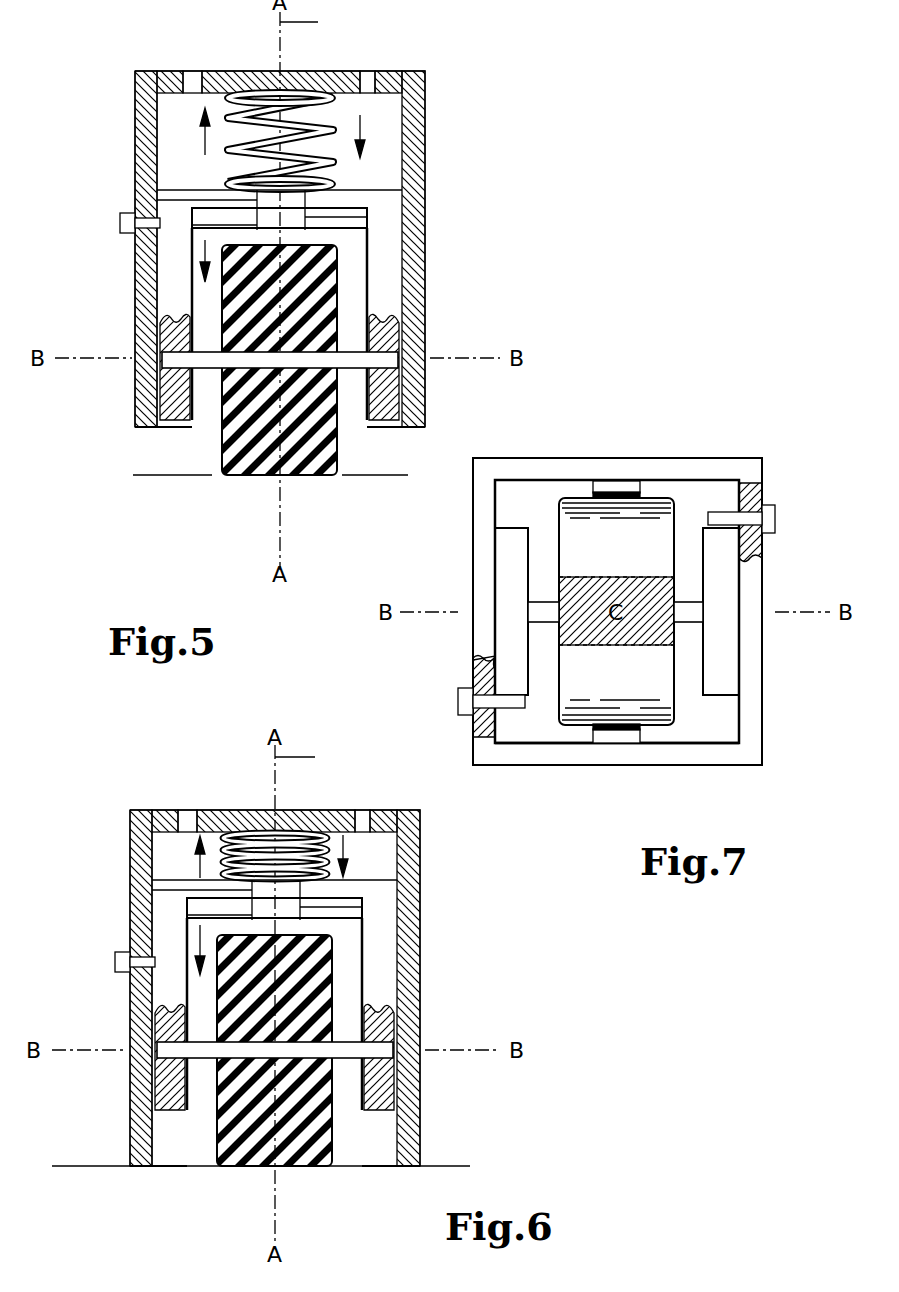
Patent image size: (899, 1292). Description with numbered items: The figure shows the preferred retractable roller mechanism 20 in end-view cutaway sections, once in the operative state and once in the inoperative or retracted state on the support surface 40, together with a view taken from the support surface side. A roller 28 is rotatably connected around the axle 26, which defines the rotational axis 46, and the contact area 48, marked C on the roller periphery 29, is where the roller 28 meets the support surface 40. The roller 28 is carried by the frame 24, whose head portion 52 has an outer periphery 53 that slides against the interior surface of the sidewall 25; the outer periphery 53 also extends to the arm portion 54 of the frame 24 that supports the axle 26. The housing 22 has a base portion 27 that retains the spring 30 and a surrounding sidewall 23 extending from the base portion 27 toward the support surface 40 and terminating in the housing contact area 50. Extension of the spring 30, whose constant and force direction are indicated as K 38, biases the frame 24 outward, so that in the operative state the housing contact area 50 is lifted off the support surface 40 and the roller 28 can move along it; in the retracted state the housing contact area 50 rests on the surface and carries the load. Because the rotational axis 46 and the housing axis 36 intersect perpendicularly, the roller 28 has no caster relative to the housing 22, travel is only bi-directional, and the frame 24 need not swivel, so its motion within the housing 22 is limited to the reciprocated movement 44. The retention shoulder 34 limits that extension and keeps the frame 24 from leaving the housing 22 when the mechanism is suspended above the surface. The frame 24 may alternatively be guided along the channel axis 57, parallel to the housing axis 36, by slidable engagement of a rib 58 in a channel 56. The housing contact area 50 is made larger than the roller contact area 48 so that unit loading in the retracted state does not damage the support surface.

In FIG. 5, the retractable roller mechanism 20 is at (426, 63).
In FIG. 7, the retractable roller mechanism 20 is at (727, 454).
In FIG. 6, the retractable roller mechanism 20 is at (416, 809).
In FIG. 5, the housing 22 is at (135, 300).
In FIG. 7, the housing 22 is at (510, 765).
In FIG. 6, the housing 22 is at (130, 905).
In FIG. 5, the surrounding sidewall 23 is at (415, 106).
In FIG. 7, the surrounding sidewall 23 is at (625, 765).
In FIG. 6, the surrounding sidewall 23 is at (420, 1015).
In FIG. 5, the frame 24 is at (185, 190).
In FIG. 7, the frame 24 is at (510, 545).
In FIG. 6, the frame 24 is at (175, 878).
In FIG. 5, the sidewall 25 is at (355, 430).
In FIG. 7, the sidewall 25 is at (735, 745).
In FIG. 6, the sidewall 25 is at (415, 1140).
In FIG. 5, the axle 26 is at (212, 380).
In FIG. 7, the axle 26 is at (540, 615).
In FIG. 6, the axle 26 is at (200, 1065).
In FIG. 5, the base portion 27 is at (350, 70).
In FIG. 6, the base portion 27 is at (345, 810).
In FIG. 5, the roller 28 is at (215, 478).
In FIG. 7, the roller 28 is at (690, 745).
In FIG. 6, the roller 28 is at (215, 1150).
In FIG. 5, the roller periphery 29 is at (335, 245).
In FIG. 7, the roller periphery 29 is at (559, 510).
In FIG. 6, the roller periphery 29 is at (332, 935).
In FIG. 5, the spring 30 is at (225, 92).
In FIG. 6, the spring 30 is at (222, 832).
In FIG. 5, the retention shoulder 34 is at (118, 222).
In FIG. 7, the retention shoulder 34 is at (458, 702).
In FIG. 6, the retention shoulder 34 is at (113, 965).
In FIG. 5, the housing axis 36 is at (315, 22).
In FIG. 6, the housing axis 36 is at (310, 757).
In FIG. 5, the spring constant K 38 is at (365, 135).
In FIG. 6, the spring constant K 38 is at (360, 840).
In FIG. 5, the support surface 40 is at (160, 475).
In FIG. 6, the support surface 40 is at (110, 1168).
In FIG. 5, the reciprocated movement 44 is at (203, 140).
In FIG. 6, the reciprocated movement 44 is at (198, 835).
In FIG. 5, the rotational axis 46 is at (100, 365).
In FIG. 7, the rotational axis 46 is at (420, 600).
In FIG. 6, the rotational axis 46 is at (98, 1056).
In FIG. 5, the contact area 48 is at (300, 478).
In FIG. 7, the contact area 48 is at (665, 580).
In FIG. 6, the contact area 48 is at (298, 1170).
In FIG. 5, the housing contact area 50 is at (378, 424).
In FIG. 7, the housing contact area 50 is at (583, 745).
In FIG. 6, the housing contact area 50 is at (140, 1168).
In FIG. 5, the head portion 52 is at (375, 192).
In FIG. 7, the head portion 52 is at (695, 480).
In FIG. 6, the head portion 52 is at (375, 882).
In FIG. 5, the outer periphery 53 is at (400, 196).
In FIG. 7, the outer periphery 53 is at (740, 713).
In FIG. 6, the outer periphery 53 is at (395, 898).
In FIG. 5, the arm portion 54 is at (385, 285).
In FIG. 7, the arm portion 54 is at (727, 668).
In FIG. 6, the arm portion 54 is at (380, 978).
In FIG. 5, the channel 56 is at (267, 200).
In FIG. 7, the channel 56 is at (580, 492).
In FIG. 6, the channel 56 is at (262, 890).
In FIG. 5, the channel axis 57 is at (345, 238).
In FIG. 6, the channel axis 57 is at (340, 928).
In FIG. 5, the rib 58 is at (370, 218).
In FIG. 7, the rib 58 is at (612, 480).
In FIG. 6, the rib 58 is at (365, 908).